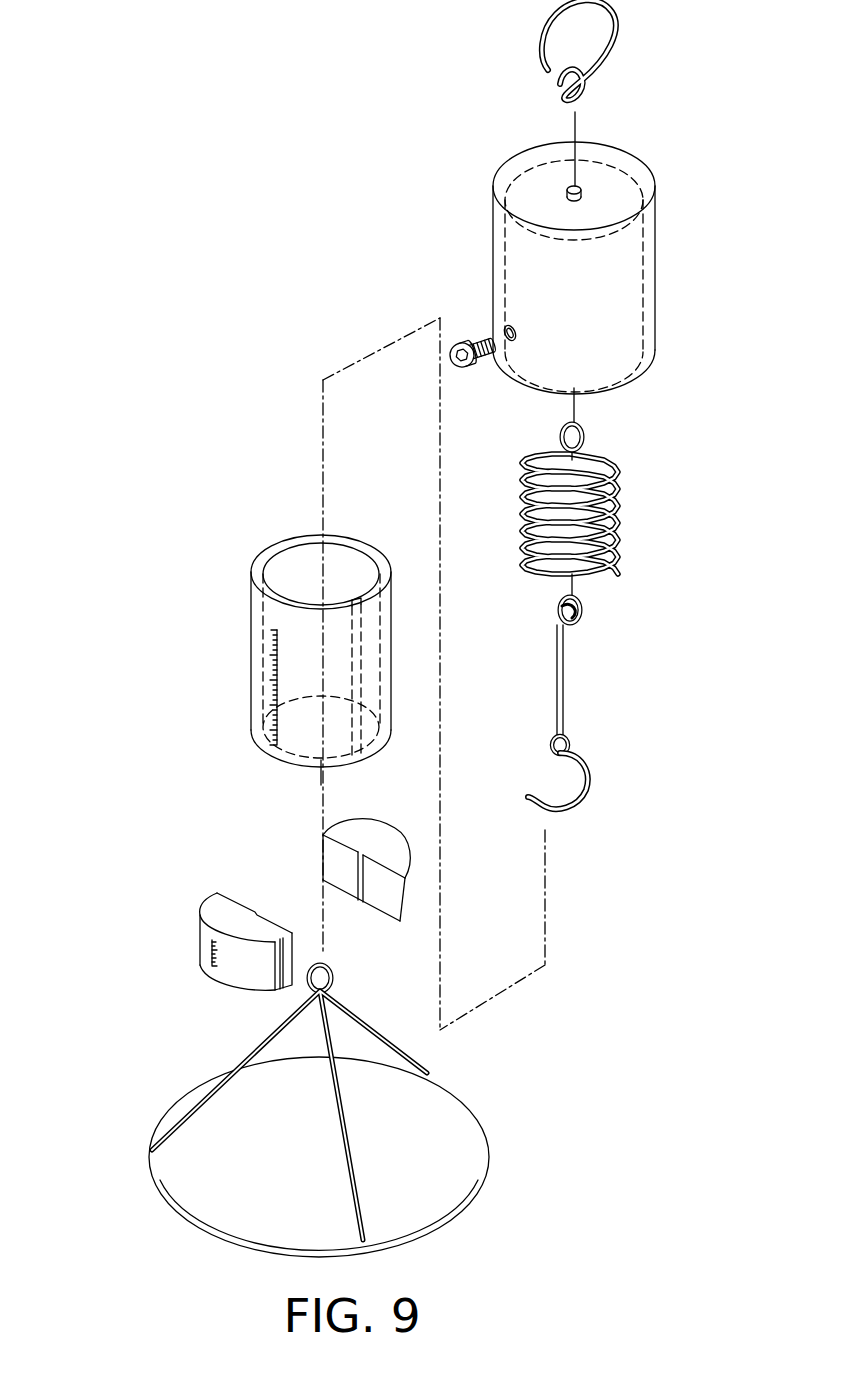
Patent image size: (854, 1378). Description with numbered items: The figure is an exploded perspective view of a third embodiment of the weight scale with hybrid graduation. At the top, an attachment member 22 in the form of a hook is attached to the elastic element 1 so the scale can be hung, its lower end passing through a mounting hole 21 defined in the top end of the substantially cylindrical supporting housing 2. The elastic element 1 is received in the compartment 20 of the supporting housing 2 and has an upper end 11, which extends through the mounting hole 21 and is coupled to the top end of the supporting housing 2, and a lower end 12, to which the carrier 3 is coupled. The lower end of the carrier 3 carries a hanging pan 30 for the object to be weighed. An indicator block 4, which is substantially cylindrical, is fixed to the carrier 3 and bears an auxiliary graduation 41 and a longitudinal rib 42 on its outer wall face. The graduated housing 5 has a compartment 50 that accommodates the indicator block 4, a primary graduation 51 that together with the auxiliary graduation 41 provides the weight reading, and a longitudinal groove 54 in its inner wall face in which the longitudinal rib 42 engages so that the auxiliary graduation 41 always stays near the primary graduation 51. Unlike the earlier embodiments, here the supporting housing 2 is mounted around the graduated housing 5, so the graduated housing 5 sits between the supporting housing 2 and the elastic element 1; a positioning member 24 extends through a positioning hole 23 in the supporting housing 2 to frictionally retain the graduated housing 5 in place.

The elastic element 1 is at (633, 530).
The upper end 11 is at (585, 433).
The lower end 12 is at (585, 602).
The supporting housing 2 is at (665, 220).
The compartment 20 is at (648, 287).
The mounting hole 21 is at (580, 185).
The attachment member 22 is at (613, 29).
The positioning hole 23 is at (505, 330).
The positioning member 24 is at (477, 370).
The carrier 3 is at (583, 733).
The hanging pan 30 is at (177, 1112).
The indicator block 4 is at (198, 892).
The auxiliary graduation 41 is at (212, 950).
The longitudinal rib 42 is at (275, 967).
The graduated housing 5 is at (247, 587).
The compartment 50 is at (293, 568).
The primary graduation 51 is at (275, 690).
The longitudinal groove 54 is at (353, 603).